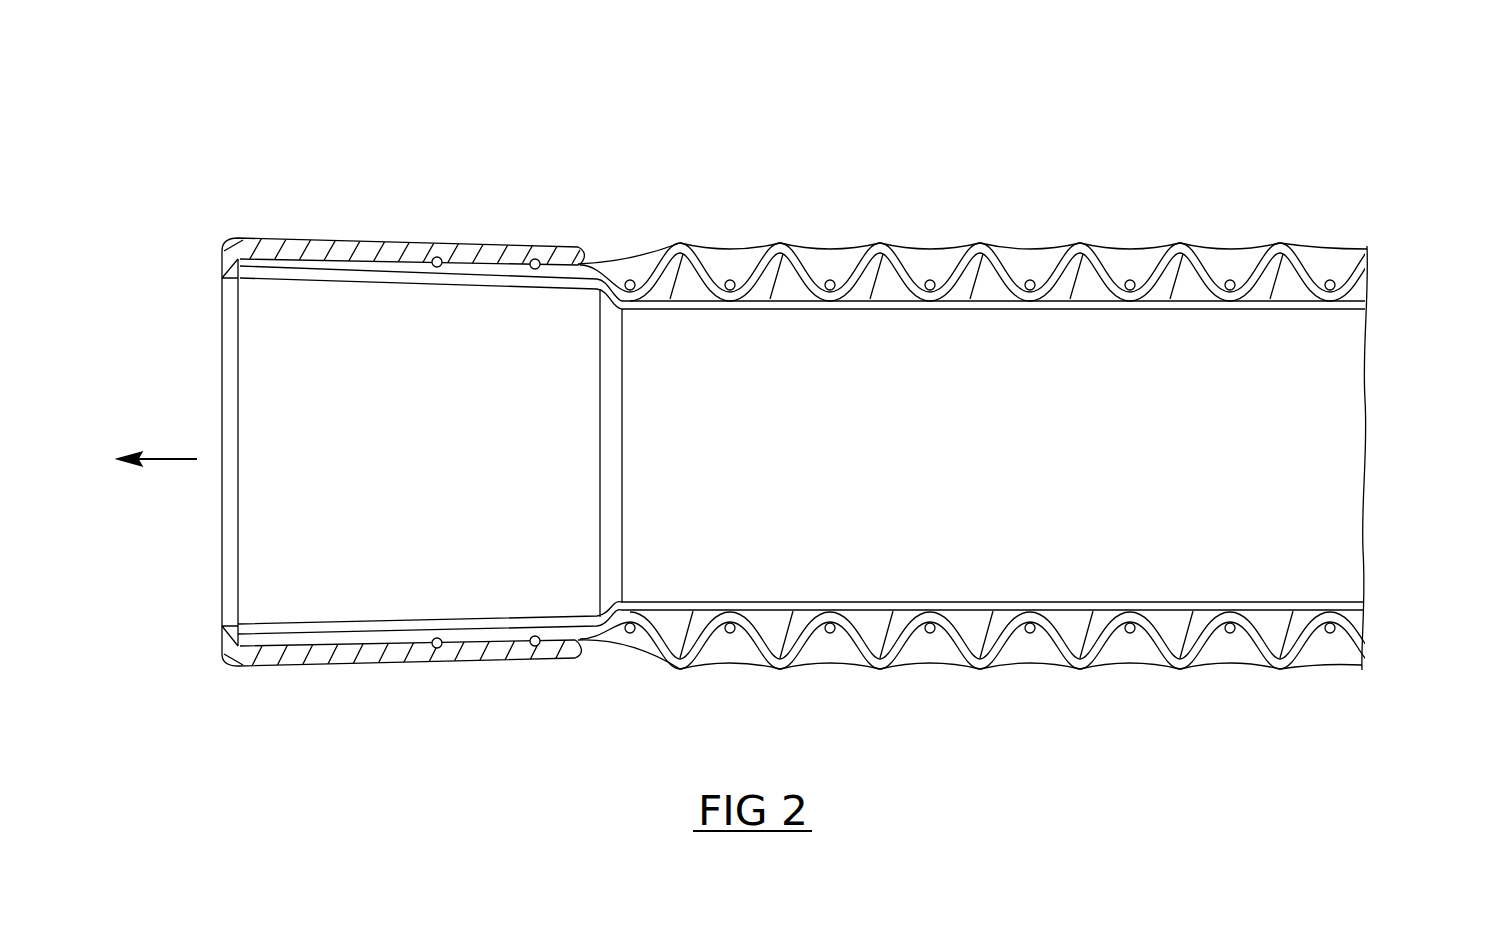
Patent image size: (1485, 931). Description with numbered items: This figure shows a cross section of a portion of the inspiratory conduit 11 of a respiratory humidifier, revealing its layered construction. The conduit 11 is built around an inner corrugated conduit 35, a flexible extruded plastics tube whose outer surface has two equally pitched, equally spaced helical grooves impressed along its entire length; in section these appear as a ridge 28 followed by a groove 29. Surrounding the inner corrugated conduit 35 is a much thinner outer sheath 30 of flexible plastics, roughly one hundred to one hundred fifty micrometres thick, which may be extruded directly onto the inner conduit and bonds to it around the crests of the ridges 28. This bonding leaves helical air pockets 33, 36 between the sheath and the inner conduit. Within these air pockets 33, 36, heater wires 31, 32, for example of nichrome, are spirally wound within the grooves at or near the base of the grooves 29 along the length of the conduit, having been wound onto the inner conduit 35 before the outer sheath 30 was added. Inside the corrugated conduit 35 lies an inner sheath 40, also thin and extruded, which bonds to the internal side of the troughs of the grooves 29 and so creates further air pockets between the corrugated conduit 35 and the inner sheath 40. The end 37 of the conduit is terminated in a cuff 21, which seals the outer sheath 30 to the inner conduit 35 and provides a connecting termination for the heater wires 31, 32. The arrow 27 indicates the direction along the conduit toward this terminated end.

The inspiratory conduit 11 is at (1123, 130).
The cuff 21 is at (400, 238).
The flow direction 27 is at (148, 452).
The ridge 28 is at (673, 250).
The groove 29 is at (737, 284).
The outer sheath 30 is at (830, 249).
The heater wire 31 is at (934, 283).
The heater wire 32 is at (1033, 278).
The air pocket 33 is at (1137, 265).
The inner corrugated conduit 35 is at (1369, 274).
The air pocket 36 is at (1237, 267).
The end of the conduit 37 is at (226, 667).
The inner sheath 40 is at (1294, 288).